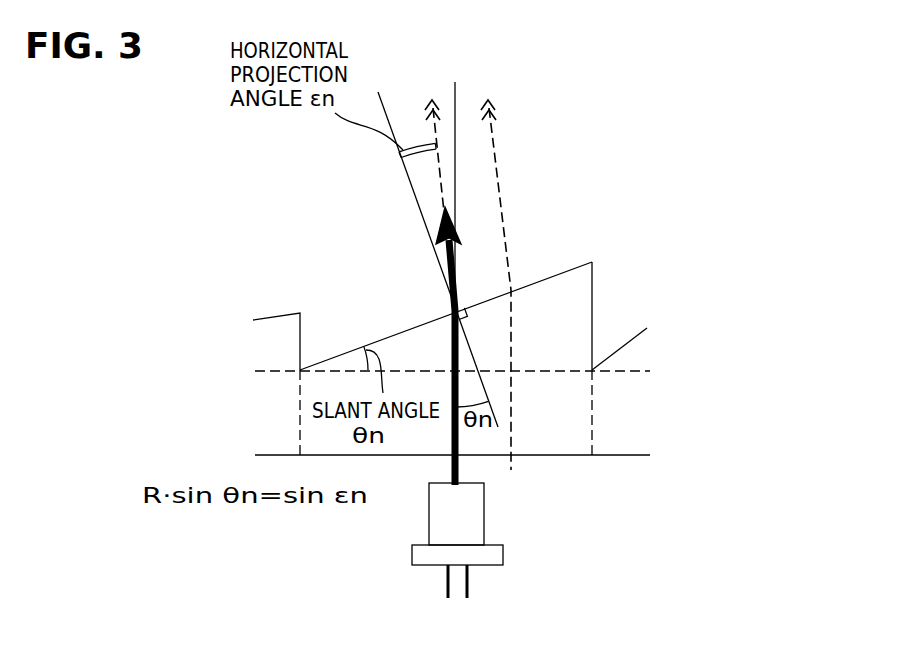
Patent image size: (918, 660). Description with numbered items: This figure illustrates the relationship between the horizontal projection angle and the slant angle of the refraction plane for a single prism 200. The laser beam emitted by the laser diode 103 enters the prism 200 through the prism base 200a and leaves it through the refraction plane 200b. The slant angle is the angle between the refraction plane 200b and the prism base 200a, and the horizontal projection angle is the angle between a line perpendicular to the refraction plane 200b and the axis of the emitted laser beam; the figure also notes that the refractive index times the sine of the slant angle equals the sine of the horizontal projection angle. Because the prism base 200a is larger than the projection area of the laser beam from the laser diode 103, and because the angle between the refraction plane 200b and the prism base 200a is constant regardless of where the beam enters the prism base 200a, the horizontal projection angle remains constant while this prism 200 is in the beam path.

The prism 200 is at (577, 298).
The prism base 200a is at (533, 455).
The refraction plane 200b is at (422, 323).
The laser diode 103 is at (467, 493).